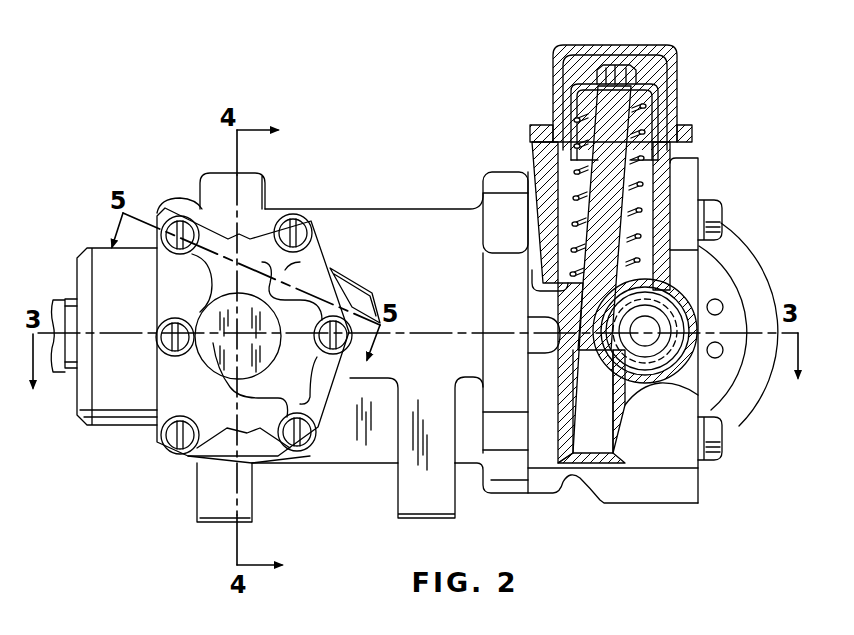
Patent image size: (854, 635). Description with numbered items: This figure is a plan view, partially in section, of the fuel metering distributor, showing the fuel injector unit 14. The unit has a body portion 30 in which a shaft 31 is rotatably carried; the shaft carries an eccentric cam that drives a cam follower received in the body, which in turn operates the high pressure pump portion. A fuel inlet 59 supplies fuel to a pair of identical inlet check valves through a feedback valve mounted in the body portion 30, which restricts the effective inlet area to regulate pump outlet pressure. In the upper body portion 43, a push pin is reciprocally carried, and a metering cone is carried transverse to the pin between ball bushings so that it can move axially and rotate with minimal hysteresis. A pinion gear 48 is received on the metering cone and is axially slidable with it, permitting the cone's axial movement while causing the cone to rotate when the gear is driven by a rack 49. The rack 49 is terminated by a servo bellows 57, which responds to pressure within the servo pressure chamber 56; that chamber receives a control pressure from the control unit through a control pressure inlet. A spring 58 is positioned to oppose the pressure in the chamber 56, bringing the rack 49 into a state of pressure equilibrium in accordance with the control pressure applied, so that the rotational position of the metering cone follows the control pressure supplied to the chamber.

The fuel injector unit 14 is at (744, 429).
The body portion 30 is at (375, 216).
The shaft 31 is at (58, 310).
The upper body portion 43 is at (620, 433).
The pinion gear 48 is at (653, 358).
The rack 49 is at (618, 143).
The servo pressure chamber 56 is at (573, 68).
The servo bellows 57 is at (655, 112).
The spring 58 is at (634, 213).
The fuel inlet 59 is at (370, 303).